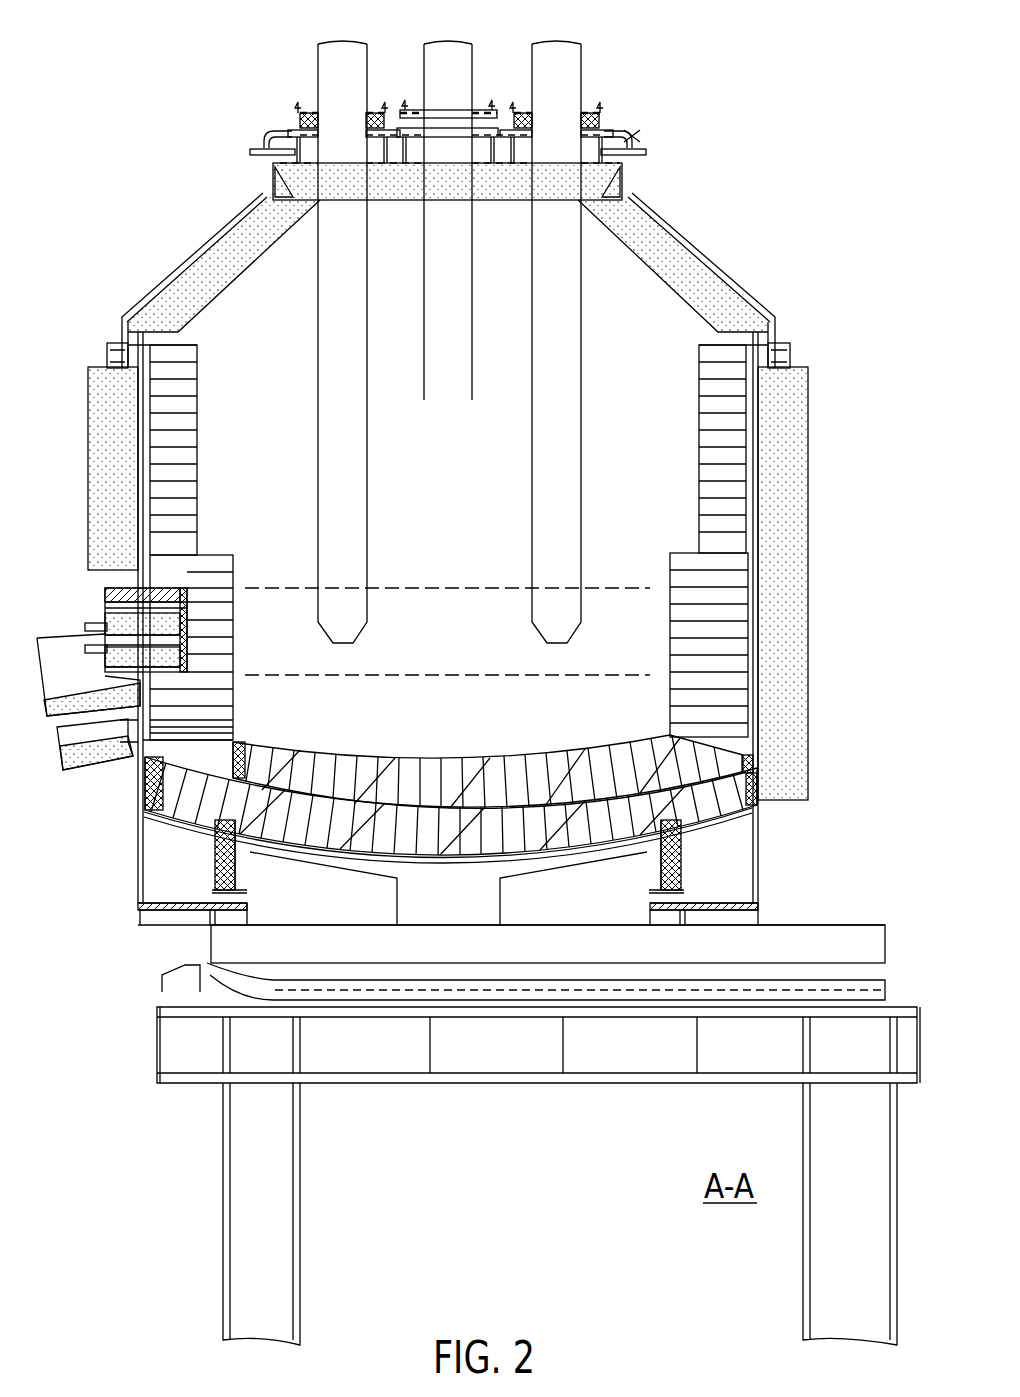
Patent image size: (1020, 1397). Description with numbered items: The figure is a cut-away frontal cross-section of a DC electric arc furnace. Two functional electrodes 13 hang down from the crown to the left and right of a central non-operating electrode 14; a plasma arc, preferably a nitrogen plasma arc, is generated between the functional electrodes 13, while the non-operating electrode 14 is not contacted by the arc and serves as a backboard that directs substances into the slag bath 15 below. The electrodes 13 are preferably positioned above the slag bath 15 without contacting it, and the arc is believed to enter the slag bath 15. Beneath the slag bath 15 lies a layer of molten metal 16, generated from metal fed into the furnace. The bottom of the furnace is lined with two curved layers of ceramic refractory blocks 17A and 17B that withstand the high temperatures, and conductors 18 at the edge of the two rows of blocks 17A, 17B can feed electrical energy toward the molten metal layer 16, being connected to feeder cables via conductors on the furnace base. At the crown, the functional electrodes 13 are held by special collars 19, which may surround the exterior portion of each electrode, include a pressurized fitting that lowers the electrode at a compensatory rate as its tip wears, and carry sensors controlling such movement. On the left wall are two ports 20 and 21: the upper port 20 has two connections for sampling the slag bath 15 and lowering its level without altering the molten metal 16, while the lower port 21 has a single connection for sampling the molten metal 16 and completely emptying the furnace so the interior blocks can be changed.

The functional electrodes 13 is at (375, 548).
The non-operating electrode 14 is at (452, 413).
The slag bath 15 is at (633, 630).
The layer of molten metal 16 is at (633, 703).
The layer of blocks 17A is at (636, 770).
The layer of blocks 17B is at (660, 813).
The conductors 18 is at (680, 740).
The collars 19 is at (288, 120).
The port 20 is at (70, 662).
The port 21 is at (88, 742).